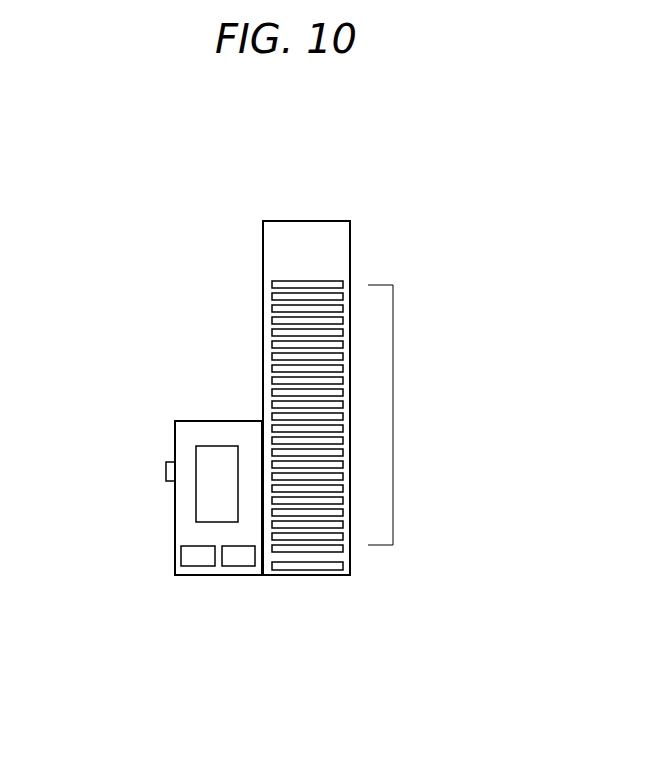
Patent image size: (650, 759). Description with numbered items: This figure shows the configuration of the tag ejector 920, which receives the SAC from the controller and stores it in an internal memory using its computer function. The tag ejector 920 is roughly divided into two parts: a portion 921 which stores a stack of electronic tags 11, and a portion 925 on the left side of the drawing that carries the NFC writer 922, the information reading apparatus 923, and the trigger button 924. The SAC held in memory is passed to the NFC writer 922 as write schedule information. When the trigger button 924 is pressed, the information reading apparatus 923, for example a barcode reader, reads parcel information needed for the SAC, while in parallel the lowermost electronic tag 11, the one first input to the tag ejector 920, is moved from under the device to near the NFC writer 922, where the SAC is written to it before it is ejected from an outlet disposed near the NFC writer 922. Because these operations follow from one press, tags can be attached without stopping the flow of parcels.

The tag ejector 920 is at (310, 167).
The portion which stores electronic tag 921 is at (350, 262).
The electronic tag 11 is at (393, 417).
The portion having NFC writer, information reading apparatus, and trigger button 925 is at (188, 420).
The trigger button 924 is at (163, 470).
The information reading apparatus 923 is at (180, 555).
The NFC writer 922 is at (239, 567).